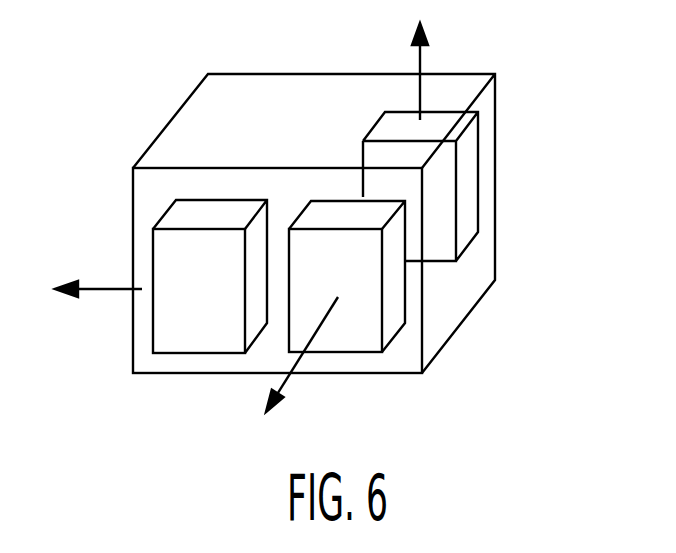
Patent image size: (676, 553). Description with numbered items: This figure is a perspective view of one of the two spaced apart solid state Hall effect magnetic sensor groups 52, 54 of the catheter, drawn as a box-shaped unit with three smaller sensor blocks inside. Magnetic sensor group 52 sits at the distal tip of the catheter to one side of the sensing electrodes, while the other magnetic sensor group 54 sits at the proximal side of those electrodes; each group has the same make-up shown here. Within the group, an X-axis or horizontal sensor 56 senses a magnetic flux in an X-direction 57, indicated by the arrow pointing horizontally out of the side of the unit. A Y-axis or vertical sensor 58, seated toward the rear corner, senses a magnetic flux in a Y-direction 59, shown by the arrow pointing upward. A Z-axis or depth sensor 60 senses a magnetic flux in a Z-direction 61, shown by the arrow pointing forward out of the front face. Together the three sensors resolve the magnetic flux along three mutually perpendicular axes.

The magnetic sensor group 52 is at (295, 220).
The magnetic sensor group 54 is at (172, 118).
The X-axis or horizontal sensor 56 is at (172, 255).
The X-direction 57 is at (102, 293).
The Y-axis or vertical sensor 58 is at (470, 173).
The Y-direction 59 is at (423, 57).
The Z-axis or depth sensor 60 is at (367, 339).
The Z-direction 61 is at (288, 386).